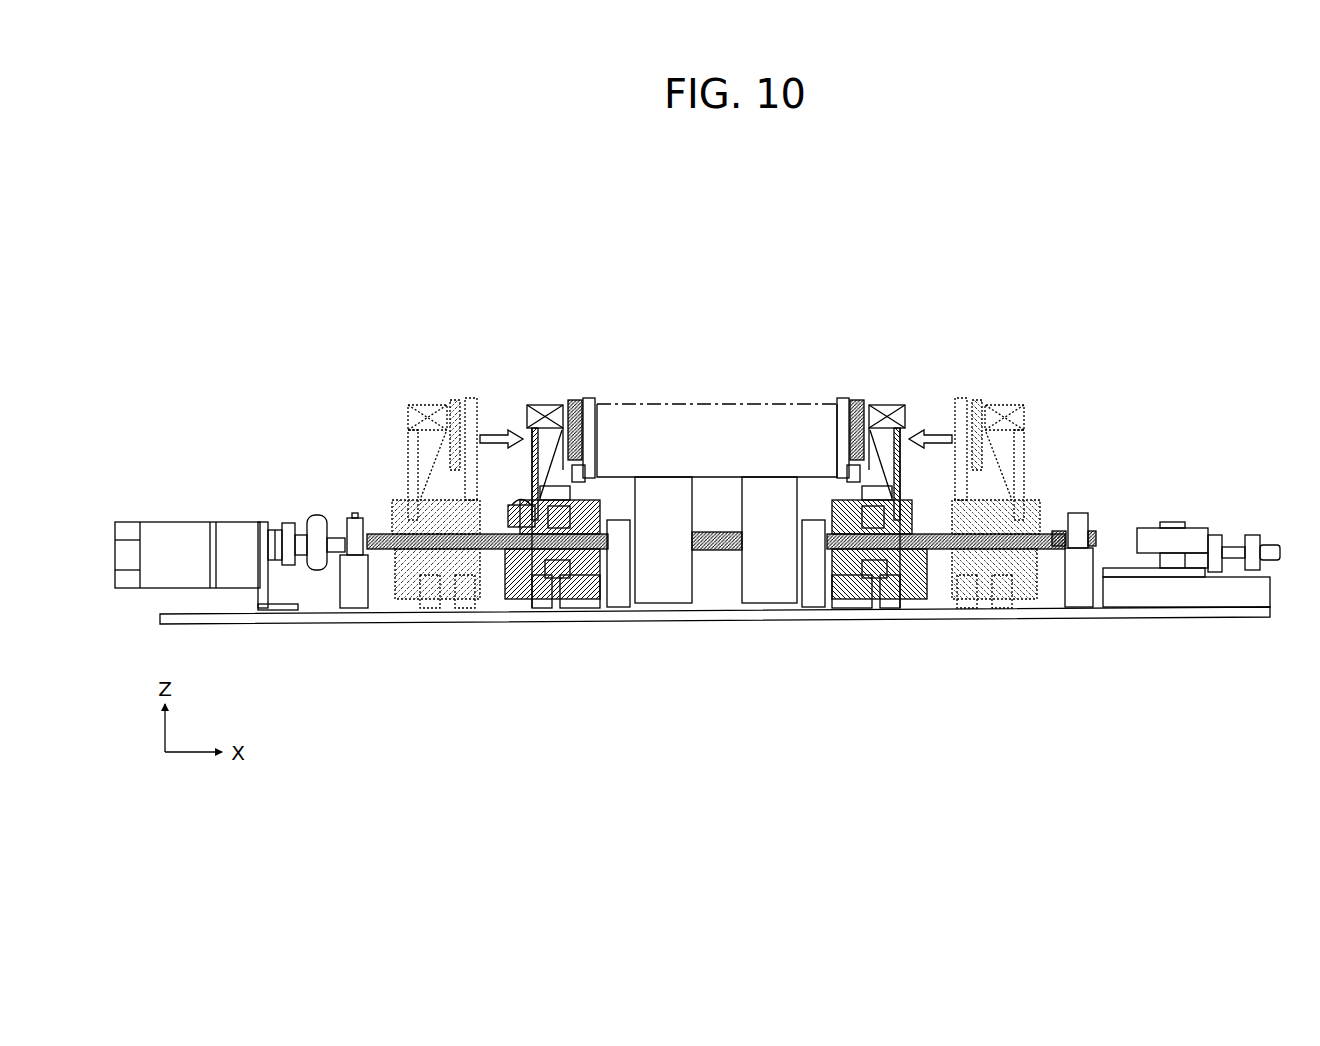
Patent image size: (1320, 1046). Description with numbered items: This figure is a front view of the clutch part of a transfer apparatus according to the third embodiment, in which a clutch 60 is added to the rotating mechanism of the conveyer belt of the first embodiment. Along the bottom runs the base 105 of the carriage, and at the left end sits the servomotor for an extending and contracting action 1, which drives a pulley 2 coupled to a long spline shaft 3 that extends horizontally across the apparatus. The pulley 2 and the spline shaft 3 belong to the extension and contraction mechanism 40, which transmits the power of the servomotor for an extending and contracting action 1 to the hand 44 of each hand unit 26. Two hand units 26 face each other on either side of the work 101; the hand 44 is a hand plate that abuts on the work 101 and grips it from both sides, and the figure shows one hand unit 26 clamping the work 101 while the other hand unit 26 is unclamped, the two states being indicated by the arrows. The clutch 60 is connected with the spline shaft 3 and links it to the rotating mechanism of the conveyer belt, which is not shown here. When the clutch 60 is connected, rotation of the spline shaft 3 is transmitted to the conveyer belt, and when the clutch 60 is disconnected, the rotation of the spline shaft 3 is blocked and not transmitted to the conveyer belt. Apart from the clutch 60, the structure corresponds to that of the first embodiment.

The servomotor for an extending and contracting action 1 is at (172, 545).
The pulley 2 is at (318, 572).
The spline shaft 3 is at (494, 558).
The hand unit 26 is at (410, 398).
The extension and contraction mechanism 40 is at (569, 628).
The hand 44 is at (588, 398).
The clutch 60 is at (522, 500).
The work 101 is at (703, 404).
The base 105 is at (1205, 618).